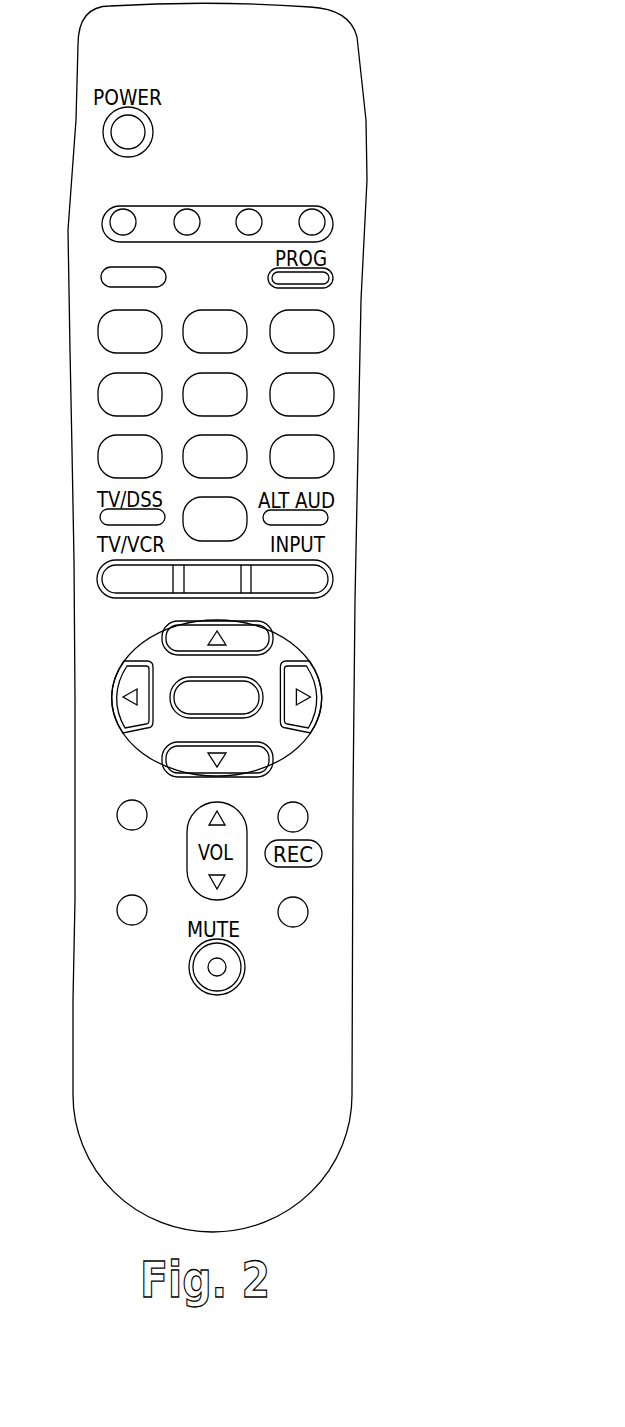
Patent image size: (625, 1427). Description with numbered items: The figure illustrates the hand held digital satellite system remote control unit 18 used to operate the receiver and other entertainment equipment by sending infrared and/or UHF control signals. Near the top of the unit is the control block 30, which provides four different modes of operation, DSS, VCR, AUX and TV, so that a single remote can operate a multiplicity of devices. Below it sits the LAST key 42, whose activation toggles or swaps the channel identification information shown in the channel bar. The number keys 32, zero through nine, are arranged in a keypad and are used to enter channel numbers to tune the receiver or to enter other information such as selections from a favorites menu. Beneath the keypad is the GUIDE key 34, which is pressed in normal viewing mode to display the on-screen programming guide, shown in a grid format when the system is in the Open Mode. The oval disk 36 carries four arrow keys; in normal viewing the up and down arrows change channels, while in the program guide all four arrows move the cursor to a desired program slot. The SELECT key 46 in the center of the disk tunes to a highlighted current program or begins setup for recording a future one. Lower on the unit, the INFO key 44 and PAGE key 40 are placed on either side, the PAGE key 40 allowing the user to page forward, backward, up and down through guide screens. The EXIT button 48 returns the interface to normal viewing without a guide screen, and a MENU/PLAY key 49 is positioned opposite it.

The remote control unit 18 is at (452, 177).
The control block 30 is at (97, 186).
The LAST key 42 is at (100, 276).
The number keys 32 is at (102, 307).
The GUIDE key 34 is at (100, 574).
The oval disk 36 is at (328, 615).
The SELECT key 46 is at (178, 716).
The INFO key 44 is at (117, 811).
The PAGE key 40 is at (307, 811).
The EXIT button 48 is at (117, 906).
The MENU/PLAY key 49 is at (307, 906).